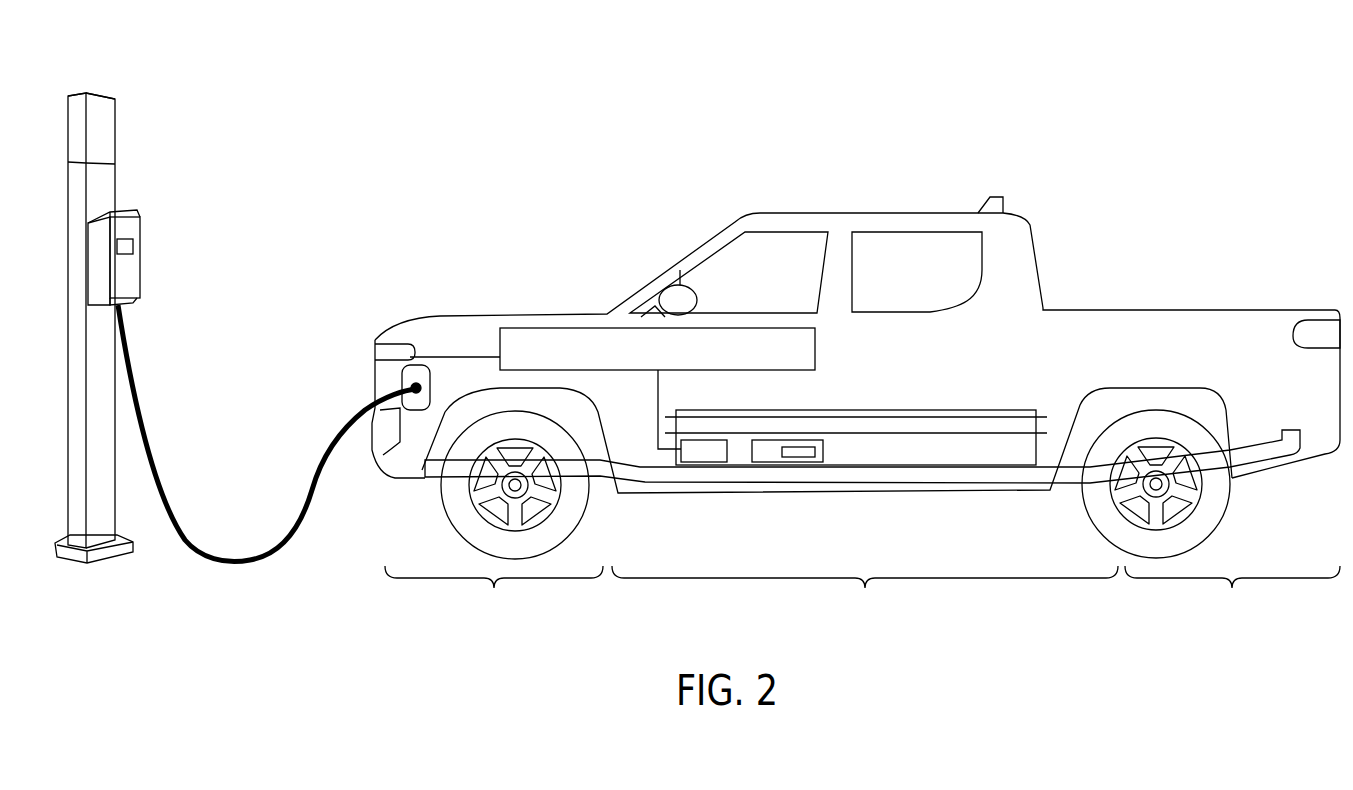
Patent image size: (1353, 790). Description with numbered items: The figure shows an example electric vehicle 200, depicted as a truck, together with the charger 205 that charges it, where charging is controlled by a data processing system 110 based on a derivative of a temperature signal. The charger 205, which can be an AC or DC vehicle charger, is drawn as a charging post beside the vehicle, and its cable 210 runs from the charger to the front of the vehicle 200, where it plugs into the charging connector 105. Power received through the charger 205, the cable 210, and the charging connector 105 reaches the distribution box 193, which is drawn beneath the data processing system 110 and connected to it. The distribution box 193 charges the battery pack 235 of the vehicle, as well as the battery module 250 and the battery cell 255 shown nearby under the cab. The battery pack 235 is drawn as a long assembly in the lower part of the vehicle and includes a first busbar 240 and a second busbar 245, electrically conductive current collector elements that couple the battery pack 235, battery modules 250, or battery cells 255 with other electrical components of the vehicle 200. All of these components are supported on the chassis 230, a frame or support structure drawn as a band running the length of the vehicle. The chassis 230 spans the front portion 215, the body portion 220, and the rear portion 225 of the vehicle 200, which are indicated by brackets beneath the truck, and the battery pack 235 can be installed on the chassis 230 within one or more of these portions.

The vehicle 200 is at (473, 115).
The charger 205 is at (143, 137).
The cable 210 is at (142, 443).
The charging connector 105 is at (412, 364).
The data processing system 110 is at (584, 328).
The battery pack 235 is at (879, 412).
The first busbar 240 is at (912, 415).
The second busbar 245 is at (978, 432).
The chassis 230 is at (632, 466).
The distribution box 193 is at (695, 458).
The battery cell 255 is at (788, 462).
The battery module 250 is at (818, 462).
The front portion 215 is at (494, 596).
The body portion 220 is at (865, 596).
The rear portion 225 is at (1232, 596).